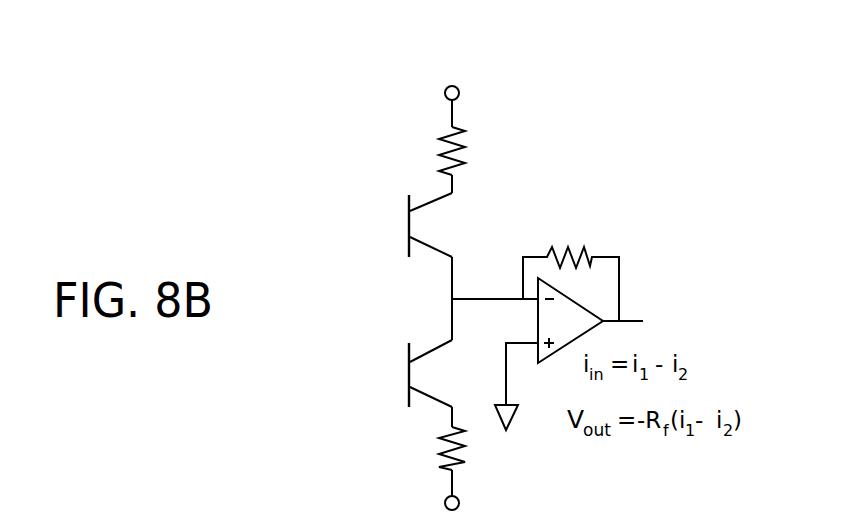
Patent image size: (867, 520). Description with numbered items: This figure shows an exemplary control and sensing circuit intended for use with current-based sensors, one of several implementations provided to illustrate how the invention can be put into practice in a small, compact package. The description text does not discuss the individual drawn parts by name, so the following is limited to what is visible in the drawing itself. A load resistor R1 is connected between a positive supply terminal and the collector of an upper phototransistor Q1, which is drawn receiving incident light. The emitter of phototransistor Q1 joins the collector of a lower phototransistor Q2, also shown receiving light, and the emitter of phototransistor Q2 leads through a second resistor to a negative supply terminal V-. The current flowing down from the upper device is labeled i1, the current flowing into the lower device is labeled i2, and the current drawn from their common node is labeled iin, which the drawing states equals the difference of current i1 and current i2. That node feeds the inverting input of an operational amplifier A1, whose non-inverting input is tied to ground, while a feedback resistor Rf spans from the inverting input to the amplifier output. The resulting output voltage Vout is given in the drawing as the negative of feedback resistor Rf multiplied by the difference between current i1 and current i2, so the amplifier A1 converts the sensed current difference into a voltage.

The 1 kohm load resistor R1 is at (496, 151).
The upper phototransistor Q1 is at (374, 212).
The lower phototransistor Q2 is at (374, 364).
The -10 V supply terminal with resistor V- is at (488, 473).
The current i1 is at (465, 264).
The current i2 is at (465, 318).
The input current iin is at (475, 289).
The operational amplifier A1 is at (569, 354).
The feedback resistor Rf is at (571, 265).
The output voltage Vout is at (668, 309).